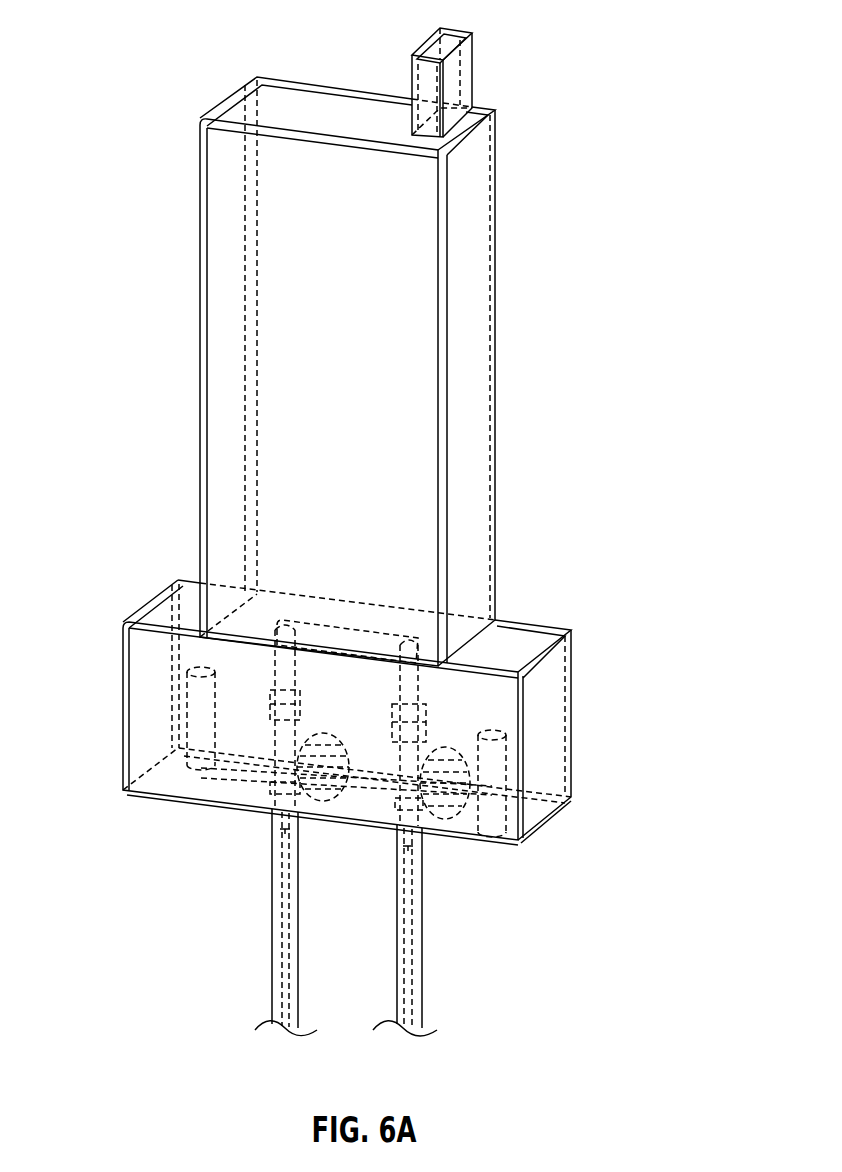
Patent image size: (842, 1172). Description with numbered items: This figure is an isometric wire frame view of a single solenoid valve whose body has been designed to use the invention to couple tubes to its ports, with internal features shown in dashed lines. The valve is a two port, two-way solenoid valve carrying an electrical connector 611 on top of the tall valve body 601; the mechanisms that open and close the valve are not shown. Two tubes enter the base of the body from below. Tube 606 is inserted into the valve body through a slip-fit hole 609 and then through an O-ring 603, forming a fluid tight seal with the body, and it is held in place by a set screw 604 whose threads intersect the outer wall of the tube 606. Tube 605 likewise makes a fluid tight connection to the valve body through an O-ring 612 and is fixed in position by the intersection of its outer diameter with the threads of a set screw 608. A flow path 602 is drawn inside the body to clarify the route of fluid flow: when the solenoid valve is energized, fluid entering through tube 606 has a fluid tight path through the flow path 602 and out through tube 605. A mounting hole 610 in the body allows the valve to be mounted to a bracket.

The housing 601 is at (220, 252).
The flow path 602 is at (338, 642).
The O-ring 603 is at (268, 717).
The set screw 604 is at (300, 767).
The tube 605 is at (413, 932).
The tube 606 is at (290, 945).
The set screw 608 is at (450, 805).
The slip-fit hole 609 is at (270, 779).
The mounting hole 610 is at (500, 816).
The electrical connector 611 is at (463, 58).
The O-ring 612 is at (427, 733).